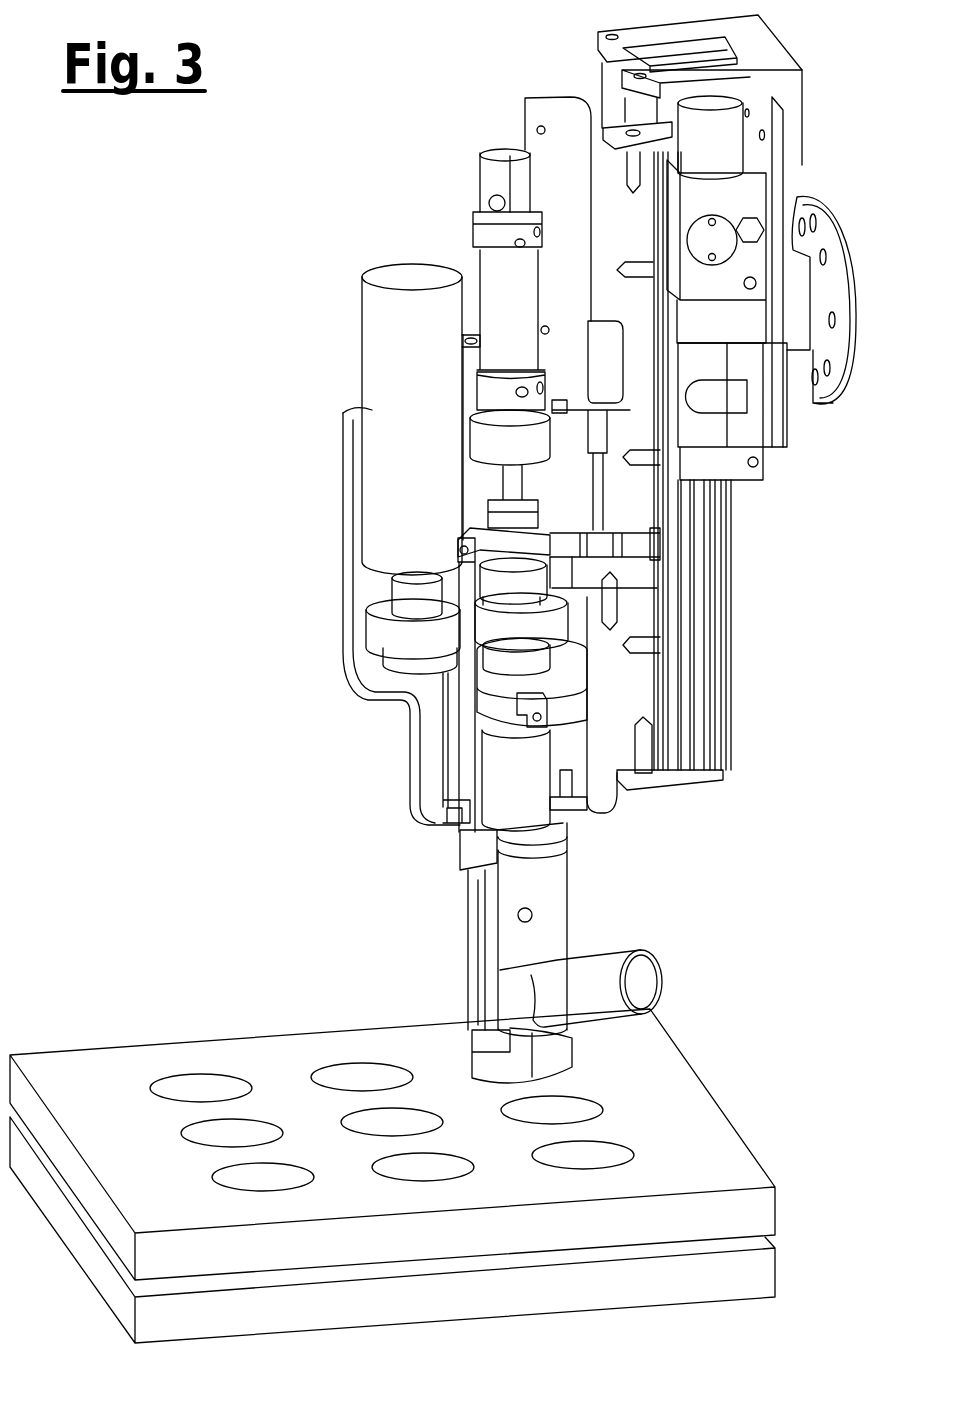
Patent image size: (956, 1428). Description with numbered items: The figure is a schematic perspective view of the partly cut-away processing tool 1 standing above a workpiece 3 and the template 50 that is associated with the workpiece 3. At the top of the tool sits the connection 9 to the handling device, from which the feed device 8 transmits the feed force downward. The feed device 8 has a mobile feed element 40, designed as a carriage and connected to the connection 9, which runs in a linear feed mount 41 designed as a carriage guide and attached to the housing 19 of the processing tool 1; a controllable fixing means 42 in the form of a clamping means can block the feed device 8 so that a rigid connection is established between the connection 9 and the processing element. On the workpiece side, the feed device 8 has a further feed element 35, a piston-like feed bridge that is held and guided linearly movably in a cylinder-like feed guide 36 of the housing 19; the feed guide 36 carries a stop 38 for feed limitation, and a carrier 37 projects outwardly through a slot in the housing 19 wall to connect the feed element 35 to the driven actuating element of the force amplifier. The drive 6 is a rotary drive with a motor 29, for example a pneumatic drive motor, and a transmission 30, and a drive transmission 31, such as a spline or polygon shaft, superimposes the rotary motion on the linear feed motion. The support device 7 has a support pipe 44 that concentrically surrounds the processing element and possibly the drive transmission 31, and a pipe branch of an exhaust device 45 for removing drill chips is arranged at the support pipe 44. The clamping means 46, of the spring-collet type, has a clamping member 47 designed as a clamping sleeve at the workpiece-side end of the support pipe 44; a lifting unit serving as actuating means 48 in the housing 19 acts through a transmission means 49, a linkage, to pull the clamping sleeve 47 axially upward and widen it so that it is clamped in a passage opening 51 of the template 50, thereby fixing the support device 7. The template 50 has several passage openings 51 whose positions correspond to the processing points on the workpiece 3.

The processing tool 1 is at (222, 332).
The workpiece 3 is at (103, 1272).
The drive 6 is at (350, 396).
The support device 7 is at (460, 902).
The feed device 8 is at (737, 768).
The connection 9 is at (834, 238).
The housing 19 is at (348, 527).
The motor 29 is at (405, 460).
The transmission 30 is at (398, 633).
The drive transmission 31 is at (552, 749).
The feed element 35 is at (490, 717).
The feed guide 36 is at (445, 775).
The carrier 37 is at (530, 843).
The stop 38 is at (568, 797).
The feed element 40 is at (733, 466).
The feed mount 41 is at (707, 686).
The fixing means 42 is at (745, 197).
The support pipe 44 is at (540, 890).
The exhaust device 45 is at (640, 987).
The clamping means 46 is at (452, 246).
The clamping member 47 is at (555, 1058).
The actuating means 48 is at (497, 185).
The transmission means 49 is at (467, 700).
The template 50 is at (110, 1067).
The passage opening 51 is at (585, 1110).